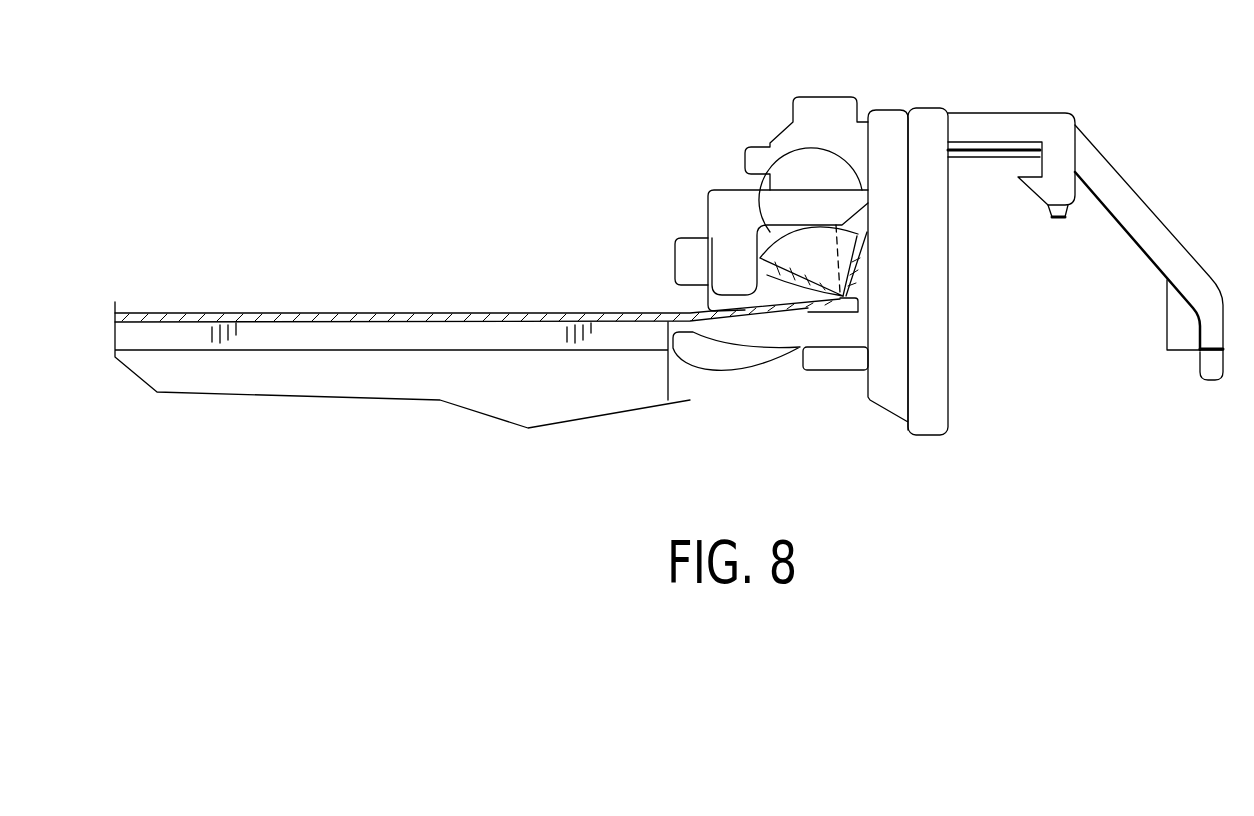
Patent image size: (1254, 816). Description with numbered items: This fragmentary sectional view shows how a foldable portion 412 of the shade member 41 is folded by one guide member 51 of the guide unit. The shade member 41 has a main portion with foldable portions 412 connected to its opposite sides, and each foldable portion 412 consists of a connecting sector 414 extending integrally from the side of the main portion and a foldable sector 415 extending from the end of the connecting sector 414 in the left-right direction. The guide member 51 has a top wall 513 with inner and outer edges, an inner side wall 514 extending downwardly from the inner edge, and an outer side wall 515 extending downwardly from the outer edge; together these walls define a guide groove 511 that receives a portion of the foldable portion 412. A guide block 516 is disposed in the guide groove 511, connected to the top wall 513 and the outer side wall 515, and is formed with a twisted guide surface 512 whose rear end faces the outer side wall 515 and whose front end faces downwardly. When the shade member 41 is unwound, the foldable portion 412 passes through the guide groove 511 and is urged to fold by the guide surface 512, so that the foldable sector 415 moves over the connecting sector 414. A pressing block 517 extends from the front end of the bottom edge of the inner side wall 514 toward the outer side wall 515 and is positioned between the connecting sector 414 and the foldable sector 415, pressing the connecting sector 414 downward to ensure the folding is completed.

The shade member 41 is at (312, 313).
The guide member 51 is at (799, 236).
The guide groove 511 is at (760, 285).
The guide surface 512 is at (811, 258).
The top wall 513 is at (823, 200).
The inner side wall 514 is at (723, 262).
The outer side wall 515 is at (866, 275).
The guide block 516 is at (777, 173).
The pressing block 517 is at (777, 295).
The foldable portion 412 is at (840, 316).
The connecting sector 414 is at (788, 313).
The foldable sector 415 is at (866, 248).